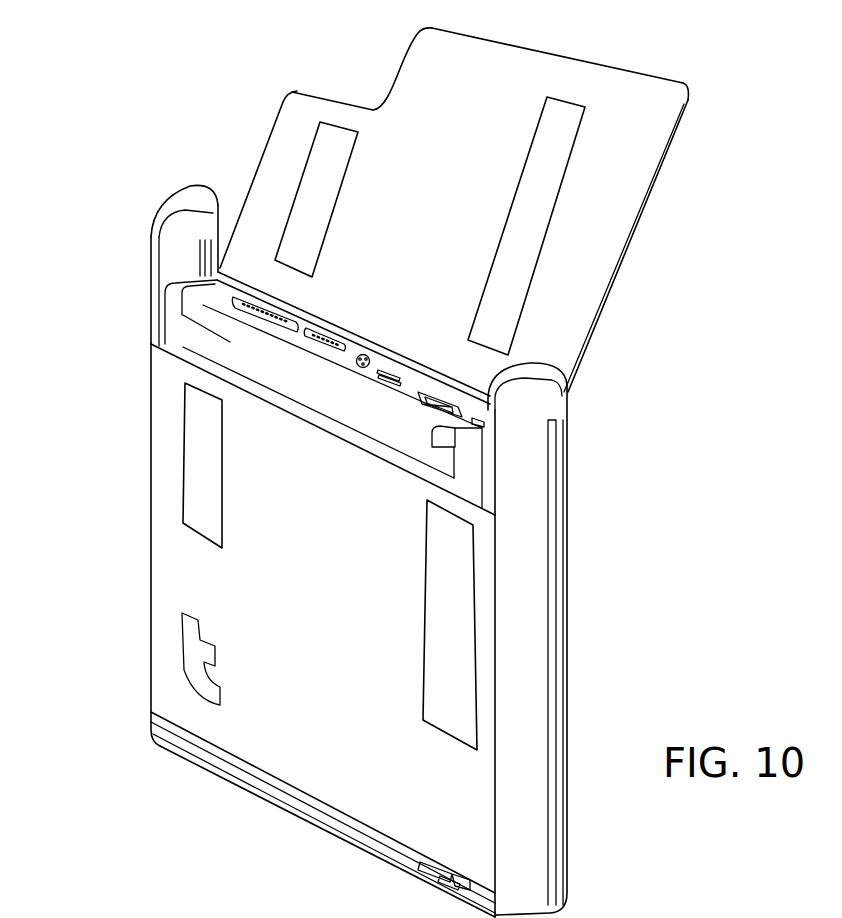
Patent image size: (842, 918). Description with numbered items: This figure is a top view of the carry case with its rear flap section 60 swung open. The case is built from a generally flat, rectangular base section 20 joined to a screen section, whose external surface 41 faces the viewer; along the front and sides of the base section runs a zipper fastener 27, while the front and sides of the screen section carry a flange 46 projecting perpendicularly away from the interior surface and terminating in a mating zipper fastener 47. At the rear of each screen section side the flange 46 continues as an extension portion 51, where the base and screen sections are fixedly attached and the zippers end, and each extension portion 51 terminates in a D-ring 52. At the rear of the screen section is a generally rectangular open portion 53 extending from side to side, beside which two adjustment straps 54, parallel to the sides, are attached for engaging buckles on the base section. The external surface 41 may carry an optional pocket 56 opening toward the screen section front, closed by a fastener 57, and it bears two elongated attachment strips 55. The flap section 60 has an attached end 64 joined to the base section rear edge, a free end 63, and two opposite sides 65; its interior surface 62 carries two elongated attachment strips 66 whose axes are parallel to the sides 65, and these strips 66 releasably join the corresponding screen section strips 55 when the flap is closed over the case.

The base section 20 is at (565, 530).
The zipper fastener 27 is at (562, 708).
The external surface 41 is at (302, 683).
The flange 46 is at (522, 620).
The zipper fastener 47 is at (553, 655).
The extension portion 51 is at (167, 253).
The D-ring 52 is at (160, 202).
The open portion 53 is at (355, 417).
The adjustment strap 54 is at (193, 323).
The attachment strip 55 is at (210, 513).
The pocket 56 is at (248, 775).
The fastener 57 is at (313, 817).
The flap section 60 is at (602, 277).
The interior surface 62 is at (477, 202).
The free end 63 is at (480, 40).
The attached end 64 is at (368, 340).
The side 65 is at (255, 157).
The attachment strip 66 is at (318, 218).